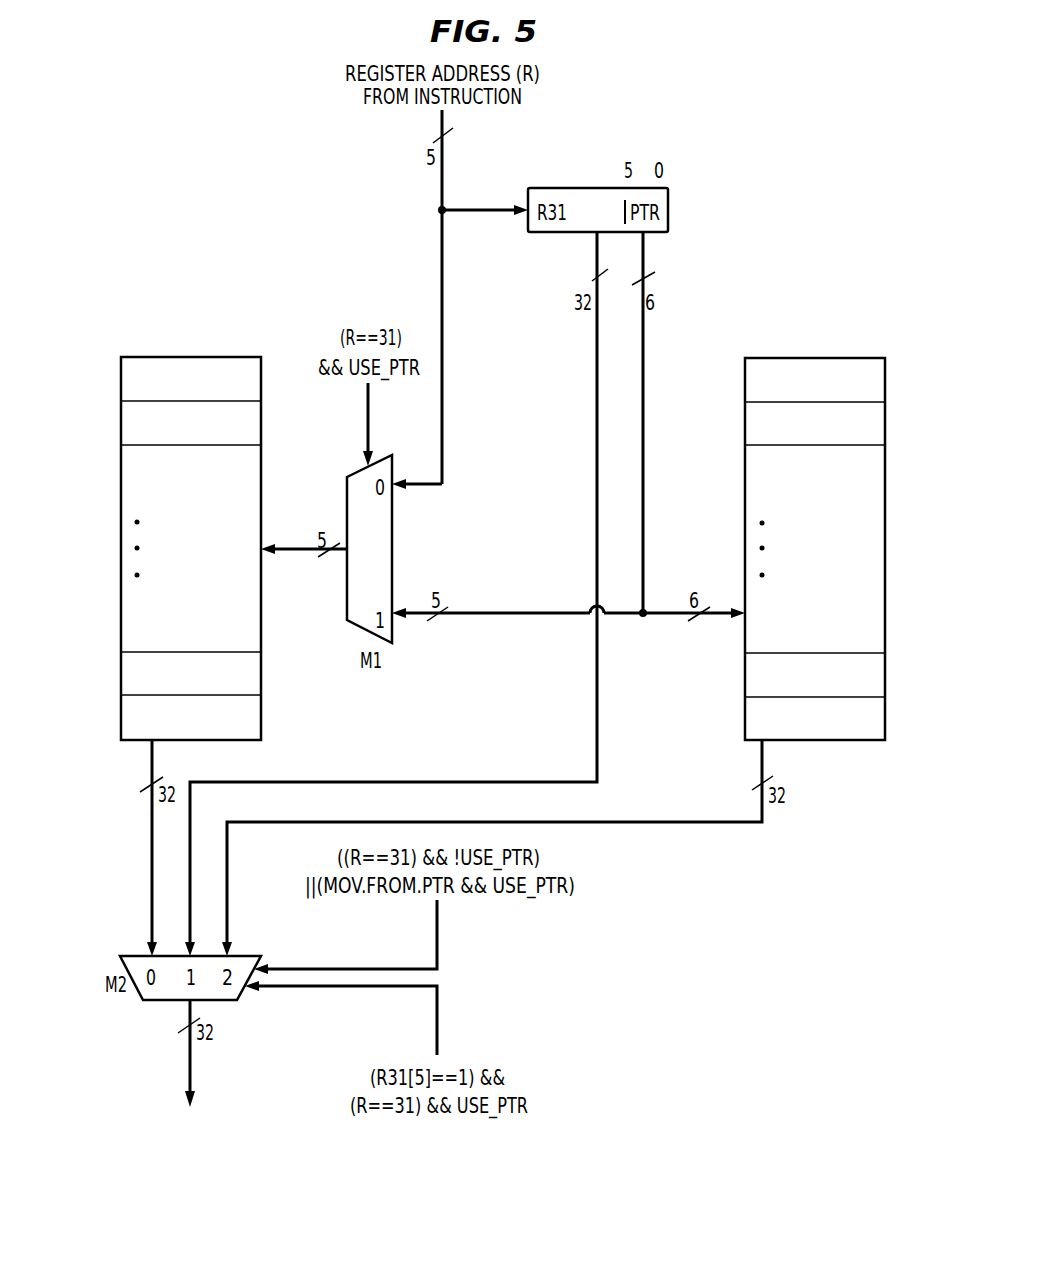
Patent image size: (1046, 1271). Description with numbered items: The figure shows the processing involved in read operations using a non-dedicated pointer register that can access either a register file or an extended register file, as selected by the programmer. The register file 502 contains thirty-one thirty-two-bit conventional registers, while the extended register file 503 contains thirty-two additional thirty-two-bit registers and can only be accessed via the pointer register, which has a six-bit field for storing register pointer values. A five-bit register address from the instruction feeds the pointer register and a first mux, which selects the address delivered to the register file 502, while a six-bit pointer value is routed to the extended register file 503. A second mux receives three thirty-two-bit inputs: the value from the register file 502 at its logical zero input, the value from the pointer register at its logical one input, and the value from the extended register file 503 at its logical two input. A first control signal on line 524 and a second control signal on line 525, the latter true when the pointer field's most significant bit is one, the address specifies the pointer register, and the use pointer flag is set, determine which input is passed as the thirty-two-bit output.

The register file 502 is at (115, 496).
The extended register file 503 is at (885, 506).
The line 524 is at (437, 922).
The line 525 is at (437, 1032).